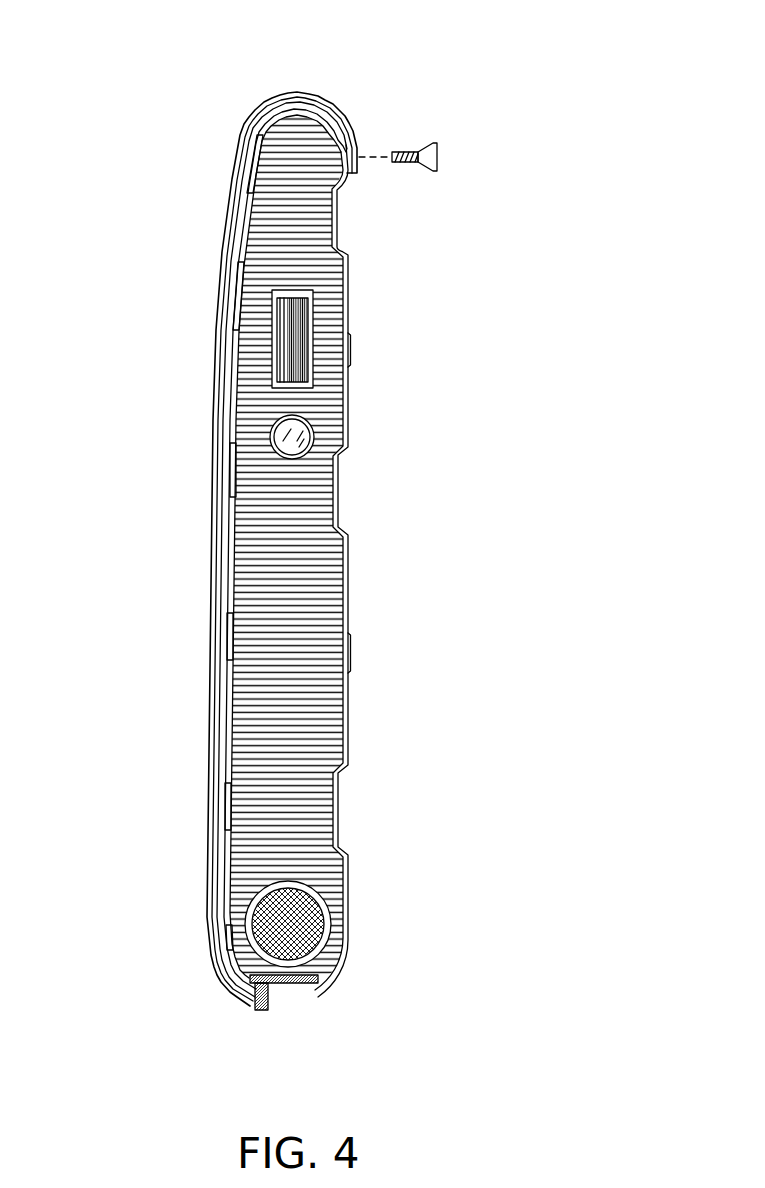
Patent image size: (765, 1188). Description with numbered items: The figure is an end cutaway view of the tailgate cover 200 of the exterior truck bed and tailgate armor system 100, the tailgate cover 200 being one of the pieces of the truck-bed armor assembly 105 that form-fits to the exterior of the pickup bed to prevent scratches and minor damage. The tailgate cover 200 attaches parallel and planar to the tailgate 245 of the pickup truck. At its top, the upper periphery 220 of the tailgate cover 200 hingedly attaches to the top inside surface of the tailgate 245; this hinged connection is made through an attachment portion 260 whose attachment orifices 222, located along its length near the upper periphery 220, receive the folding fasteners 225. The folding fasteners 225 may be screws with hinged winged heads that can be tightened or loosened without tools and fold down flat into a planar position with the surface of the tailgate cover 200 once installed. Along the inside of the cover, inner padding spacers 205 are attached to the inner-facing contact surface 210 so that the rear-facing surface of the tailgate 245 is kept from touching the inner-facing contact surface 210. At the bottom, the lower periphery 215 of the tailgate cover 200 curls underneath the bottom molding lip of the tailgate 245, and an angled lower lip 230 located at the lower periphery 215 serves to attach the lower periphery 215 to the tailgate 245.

The exterior truck bed and tailgate armor system 100 is at (476, 117).
The truck-bed armor assembly 105 is at (490, 171).
The tailgate cover 200 is at (224, 232).
The inner padding spacers 205 is at (233, 307).
The inner-facing contact surface 210 is at (230, 532).
The lower periphery 215 is at (261, 1010).
The upper periphery 220 is at (296, 91).
The attachment orifices 222 is at (357, 157).
The folding fasteners 225 is at (426, 140).
The angled lower lip 230 is at (268, 993).
The tailgate 245 is at (349, 335).
The attachment portion 260 is at (358, 124).